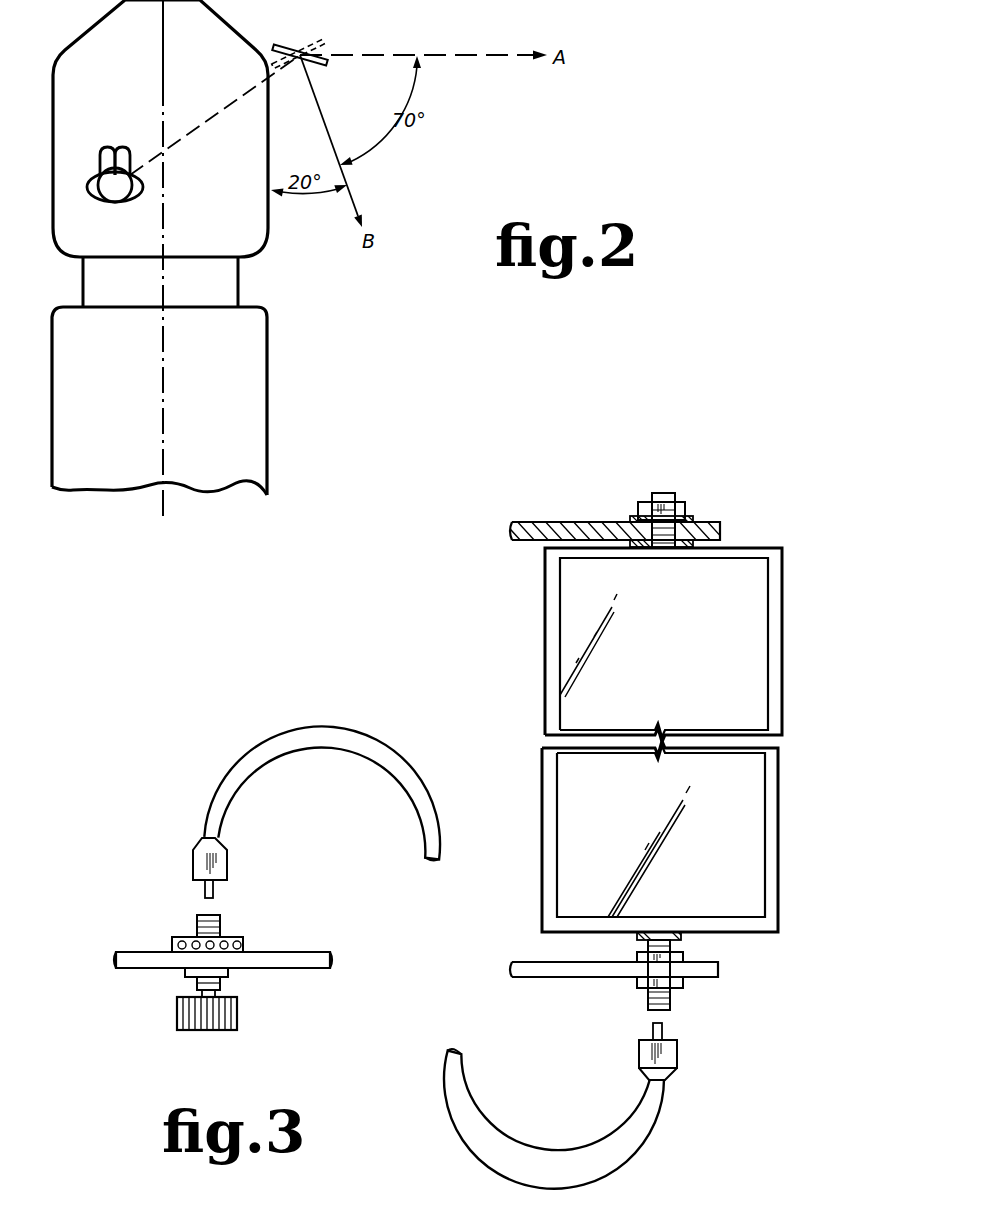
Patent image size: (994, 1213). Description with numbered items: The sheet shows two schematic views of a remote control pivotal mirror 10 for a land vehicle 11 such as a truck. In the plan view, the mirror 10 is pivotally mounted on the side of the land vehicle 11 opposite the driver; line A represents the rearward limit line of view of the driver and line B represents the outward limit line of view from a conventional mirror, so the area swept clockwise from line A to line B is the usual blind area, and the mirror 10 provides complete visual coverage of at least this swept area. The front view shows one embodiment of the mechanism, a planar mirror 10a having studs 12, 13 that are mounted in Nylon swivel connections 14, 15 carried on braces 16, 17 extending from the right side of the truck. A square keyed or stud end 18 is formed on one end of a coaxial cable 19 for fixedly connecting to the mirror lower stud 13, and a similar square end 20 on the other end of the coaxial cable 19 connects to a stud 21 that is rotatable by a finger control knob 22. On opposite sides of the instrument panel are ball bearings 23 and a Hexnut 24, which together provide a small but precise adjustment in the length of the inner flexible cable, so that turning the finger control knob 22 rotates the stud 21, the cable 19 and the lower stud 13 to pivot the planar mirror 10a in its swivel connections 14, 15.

In FIG. 2, the remote control pivotal mirror 10 is at (287, 47).
In FIG. 2, the land vehicle 11 is at (145, 72).
In FIG. 3, the planar mirror 10a is at (782, 548).
In FIG. 3, the stud 12 is at (676, 495).
In FIG. 3, the lower stud 13 is at (671, 1000).
In FIG. 3, the Nylon swivel connection 14 is at (694, 516).
In FIG. 3, the Nylon swivel connection 15 is at (682, 937).
In FIG. 3, the brace 16 is at (551, 521).
In FIG. 3, the brace 17 is at (565, 978).
In FIG. 3, the square keyed stud end 18 is at (663, 1030).
In FIG. 3, the coaxial cable 19 is at (373, 740).
In FIG. 3, the square end 20 is at (205, 888).
In FIG. 3, the stud 21 is at (222, 925).
In FIG. 3, the finger control knob 22 is at (177, 1012).
In FIG. 3, the ball bearings 23 is at (244, 945).
In FIG. 3, the Hexnut 24 is at (229, 972).